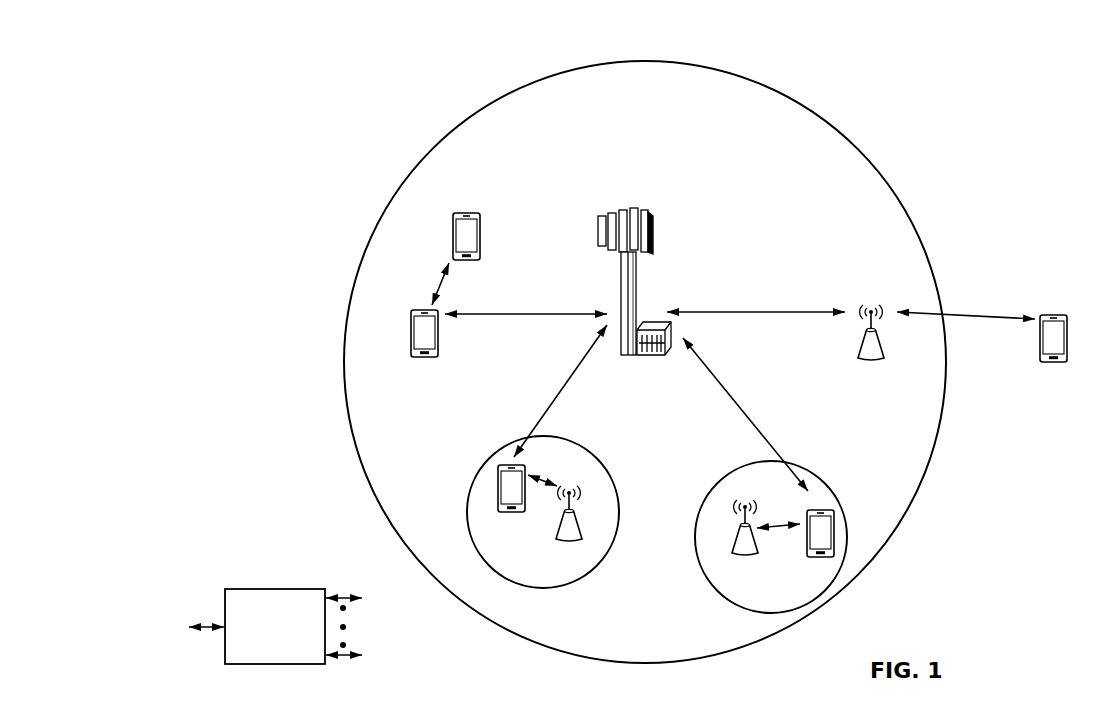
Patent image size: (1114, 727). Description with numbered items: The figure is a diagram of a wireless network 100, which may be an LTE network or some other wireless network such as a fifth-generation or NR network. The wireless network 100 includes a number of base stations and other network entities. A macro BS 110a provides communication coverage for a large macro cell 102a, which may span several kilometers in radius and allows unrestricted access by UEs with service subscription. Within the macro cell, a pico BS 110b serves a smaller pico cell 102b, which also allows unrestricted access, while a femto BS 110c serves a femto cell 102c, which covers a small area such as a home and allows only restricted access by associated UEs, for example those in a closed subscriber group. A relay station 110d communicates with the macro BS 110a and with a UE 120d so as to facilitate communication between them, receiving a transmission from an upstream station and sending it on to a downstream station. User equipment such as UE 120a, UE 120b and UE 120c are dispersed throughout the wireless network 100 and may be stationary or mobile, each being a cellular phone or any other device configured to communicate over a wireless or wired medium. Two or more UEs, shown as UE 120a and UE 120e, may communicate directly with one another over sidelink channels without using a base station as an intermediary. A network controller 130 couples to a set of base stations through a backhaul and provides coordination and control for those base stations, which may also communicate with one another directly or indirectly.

The wireless network 100 is at (262, 55).
The macro cell 102a is at (843, 133).
The pico cell 102b is at (609, 470).
The femto cell 102c is at (723, 478).
The macro BS 110a is at (644, 202).
The pico BS 110b is at (586, 535).
The femto BS 110c is at (735, 548).
The relay station 110d is at (871, 302).
The UE 120a is at (411, 332).
The UE 120b is at (505, 513).
The UE 120c is at (812, 557).
The UE 120d is at (1063, 314).
The UE 120e is at (454, 224).
The network controller 130 is at (273, 588).